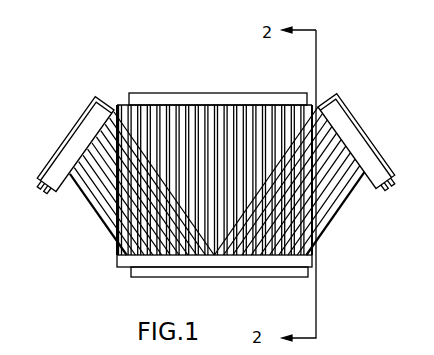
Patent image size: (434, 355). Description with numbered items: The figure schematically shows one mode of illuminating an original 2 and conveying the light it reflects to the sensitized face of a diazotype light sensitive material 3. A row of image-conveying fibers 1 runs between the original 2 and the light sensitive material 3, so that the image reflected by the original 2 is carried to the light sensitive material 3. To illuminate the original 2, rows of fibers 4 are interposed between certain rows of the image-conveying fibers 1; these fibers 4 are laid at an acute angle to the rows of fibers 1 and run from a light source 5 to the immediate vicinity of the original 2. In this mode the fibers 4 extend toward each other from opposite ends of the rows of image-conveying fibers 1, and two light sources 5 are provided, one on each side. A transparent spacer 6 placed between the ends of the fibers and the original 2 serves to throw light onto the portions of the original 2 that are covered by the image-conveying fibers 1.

The row of image-conveying fibers 1 is at (200, 127).
The original 2 is at (165, 272).
The light sensitive material 3 is at (150, 100).
The rows of fibers 4 is at (100, 207).
The light source 5 is at (58, 196).
The transparent spacer 6 is at (118, 260).